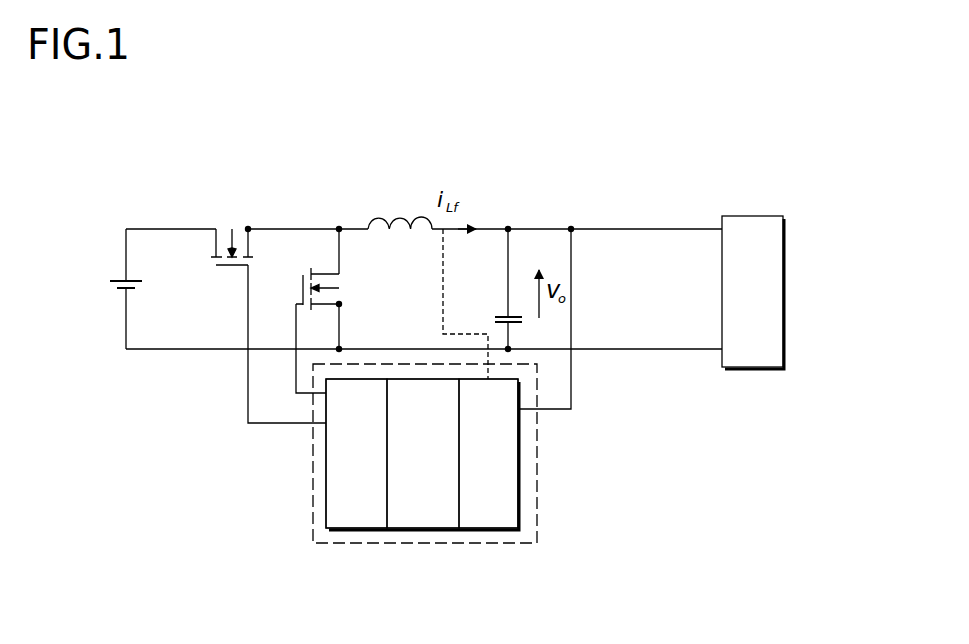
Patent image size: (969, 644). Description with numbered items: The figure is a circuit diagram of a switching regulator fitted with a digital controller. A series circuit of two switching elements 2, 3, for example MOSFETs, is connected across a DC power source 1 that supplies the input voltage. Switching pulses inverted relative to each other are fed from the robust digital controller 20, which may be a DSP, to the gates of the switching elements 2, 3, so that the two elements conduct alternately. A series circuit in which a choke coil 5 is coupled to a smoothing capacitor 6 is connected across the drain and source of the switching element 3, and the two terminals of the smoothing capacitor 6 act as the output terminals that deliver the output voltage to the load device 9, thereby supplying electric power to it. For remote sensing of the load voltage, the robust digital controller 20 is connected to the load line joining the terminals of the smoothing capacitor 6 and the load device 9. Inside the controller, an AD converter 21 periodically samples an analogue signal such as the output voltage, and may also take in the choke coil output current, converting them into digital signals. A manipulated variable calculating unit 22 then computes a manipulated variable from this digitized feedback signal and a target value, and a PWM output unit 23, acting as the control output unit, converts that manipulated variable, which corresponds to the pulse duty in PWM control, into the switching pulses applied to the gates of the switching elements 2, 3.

The DC power source 1 is at (106, 289).
The switching element 2 is at (232, 221).
The switching element 3 is at (349, 289).
The choke coil 5 is at (391, 211).
The smoothing capacitor 6 is at (500, 313).
The load device 9 is at (768, 270).
The robust digital controller 20 is at (310, 495).
The AD converter 21 is at (515, 515).
The manipulated variable calculating unit 22 is at (452, 522).
The PWM output unit 23 is at (345, 522).